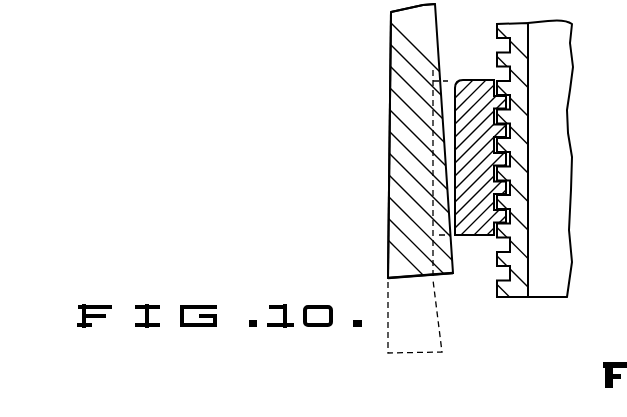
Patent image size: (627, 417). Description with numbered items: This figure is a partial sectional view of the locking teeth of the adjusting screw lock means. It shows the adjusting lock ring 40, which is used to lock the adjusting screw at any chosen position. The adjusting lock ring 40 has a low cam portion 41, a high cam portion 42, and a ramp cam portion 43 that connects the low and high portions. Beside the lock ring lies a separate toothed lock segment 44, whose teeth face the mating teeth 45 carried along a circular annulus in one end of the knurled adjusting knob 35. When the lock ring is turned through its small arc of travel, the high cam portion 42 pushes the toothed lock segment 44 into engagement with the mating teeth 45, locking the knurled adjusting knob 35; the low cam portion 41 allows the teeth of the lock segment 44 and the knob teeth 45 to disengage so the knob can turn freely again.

The knurled adjusting knob 35 is at (565, 90).
The adjusting lock ring 40 is at (381, 132).
The low cam portion 41 is at (393, 27).
The high cam portion 42 is at (388, 255).
The ramp cam portion 43 is at (398, 160).
The toothed lock segment 44 is at (488, 80).
The mating teeth 45 is at (521, 30).